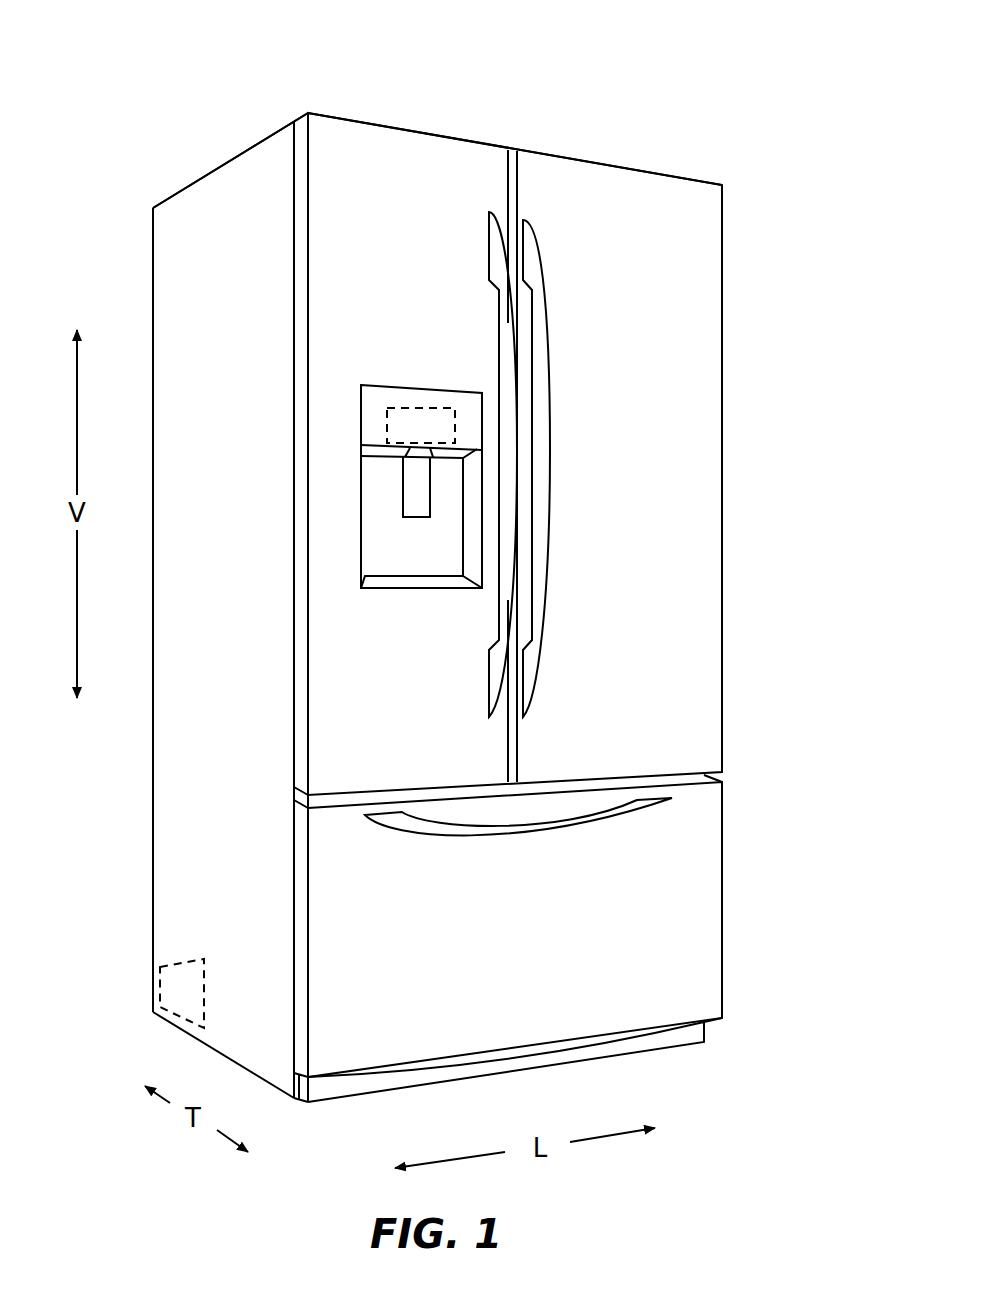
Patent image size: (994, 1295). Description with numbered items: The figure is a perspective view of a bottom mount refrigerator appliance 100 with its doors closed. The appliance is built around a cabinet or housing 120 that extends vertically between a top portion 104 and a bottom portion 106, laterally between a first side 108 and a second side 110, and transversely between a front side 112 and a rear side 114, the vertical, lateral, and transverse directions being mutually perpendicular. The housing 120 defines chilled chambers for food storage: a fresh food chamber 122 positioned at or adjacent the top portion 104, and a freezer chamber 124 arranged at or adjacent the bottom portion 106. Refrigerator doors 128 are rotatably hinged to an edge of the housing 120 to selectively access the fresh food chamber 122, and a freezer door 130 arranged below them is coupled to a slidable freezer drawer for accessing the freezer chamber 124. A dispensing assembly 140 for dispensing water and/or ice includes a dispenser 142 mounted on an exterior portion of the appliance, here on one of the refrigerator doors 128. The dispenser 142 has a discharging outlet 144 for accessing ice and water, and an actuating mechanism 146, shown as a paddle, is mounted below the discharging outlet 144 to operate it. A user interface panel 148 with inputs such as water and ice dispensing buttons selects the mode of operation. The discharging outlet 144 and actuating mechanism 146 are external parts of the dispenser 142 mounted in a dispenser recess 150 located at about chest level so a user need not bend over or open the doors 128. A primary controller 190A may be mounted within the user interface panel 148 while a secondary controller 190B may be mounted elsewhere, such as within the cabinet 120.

The refrigerator appliance 100 is at (661, 93).
The top portion 104 is at (146, 208).
The bottom portion 106 is at (150, 1008).
The first side 108 is at (301, 1107).
The second side 110 is at (711, 1049).
The front side 112 is at (311, 1008).
The rear side 114 is at (150, 845).
The housing 120 is at (228, 178).
The fresh food chamber 122 is at (733, 185).
The freezer chamber 124 is at (733, 783).
The refrigerator doors 128 is at (376, 240).
The freezer door 130 is at (499, 943).
The dispensing assembly 140 is at (399, 405).
The dispenser 142 is at (360, 534).
The discharging outlet 144 is at (417, 461).
The actuating mechanism 146 is at (417, 505).
The user interface panel 148 is at (464, 402).
The dispenser recess 150 is at (429, 553).
The primary controller 190A is at (386, 425).
The secondary controller 190B is at (187, 962).